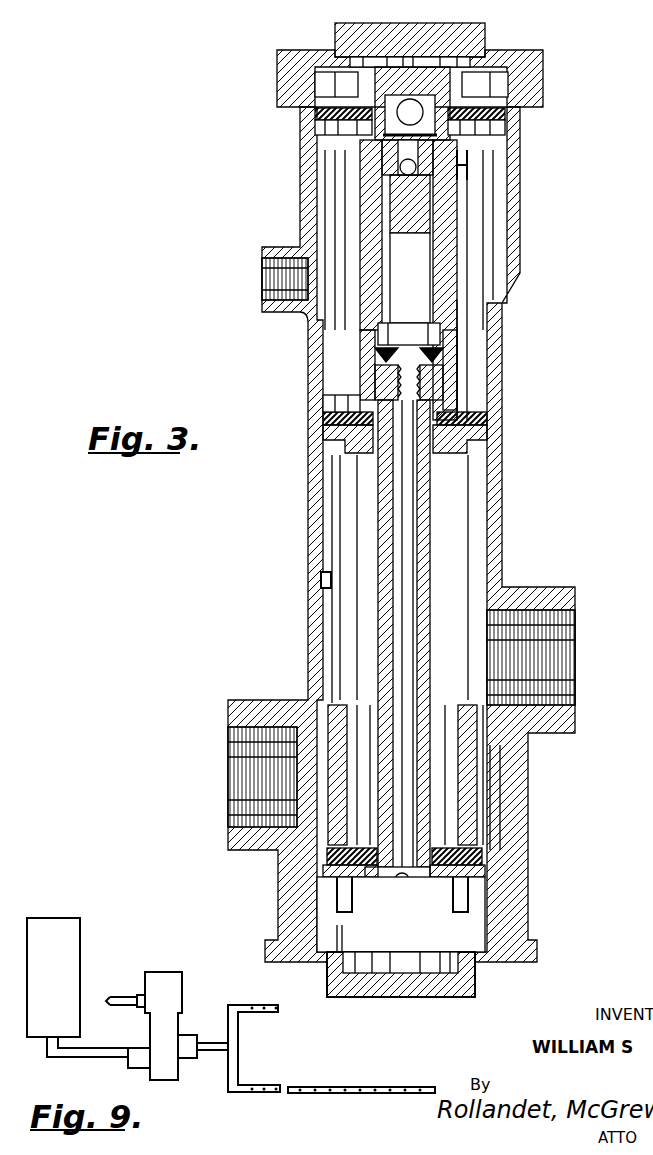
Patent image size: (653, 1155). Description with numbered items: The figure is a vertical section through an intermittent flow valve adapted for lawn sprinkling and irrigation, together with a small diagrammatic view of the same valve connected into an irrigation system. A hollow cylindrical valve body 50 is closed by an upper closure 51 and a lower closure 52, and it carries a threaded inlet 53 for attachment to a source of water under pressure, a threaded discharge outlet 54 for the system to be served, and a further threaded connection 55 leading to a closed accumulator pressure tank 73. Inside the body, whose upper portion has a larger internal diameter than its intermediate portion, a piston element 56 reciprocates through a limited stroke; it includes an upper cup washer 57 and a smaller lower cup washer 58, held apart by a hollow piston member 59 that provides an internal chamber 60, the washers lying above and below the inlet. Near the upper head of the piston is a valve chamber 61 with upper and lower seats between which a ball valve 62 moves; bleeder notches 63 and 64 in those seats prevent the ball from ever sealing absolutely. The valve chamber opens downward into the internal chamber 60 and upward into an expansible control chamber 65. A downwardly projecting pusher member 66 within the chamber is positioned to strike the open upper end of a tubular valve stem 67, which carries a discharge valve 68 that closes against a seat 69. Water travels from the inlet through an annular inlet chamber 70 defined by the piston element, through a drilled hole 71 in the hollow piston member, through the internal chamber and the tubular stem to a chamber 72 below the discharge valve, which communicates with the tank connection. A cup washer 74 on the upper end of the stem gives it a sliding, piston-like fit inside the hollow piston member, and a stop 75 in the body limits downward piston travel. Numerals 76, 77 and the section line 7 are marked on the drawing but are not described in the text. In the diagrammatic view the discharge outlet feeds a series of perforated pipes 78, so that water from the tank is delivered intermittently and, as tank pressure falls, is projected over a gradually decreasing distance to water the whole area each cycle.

In FIG. 3, the valve body 50 is at (503, 463).
In FIG. 9, the valve body 50 is at (182, 990).
In FIG. 3, the upper closure 51 is at (543, 54).
In FIG. 3, the lower closure 52 is at (477, 978).
In FIG. 3, the threaded inlet 53 is at (262, 275).
In FIG. 9, the threaded inlet 53 is at (138, 997).
In FIG. 3, the discharge outlet 54 is at (560, 667).
In FIG. 9, the discharge outlet 54 is at (190, 1042).
In FIG. 3, the connection 55 is at (233, 760).
In FIG. 9, the connection 55 is at (135, 1055).
In FIG. 3, the piston element 56 is at (457, 248).
In FIG. 3, the upper cup washer 57 is at (507, 117).
In FIG. 3, the lower cup washer 58 is at (490, 422).
In FIG. 3, the hollow piston member 59 is at (457, 303).
In FIG. 3, the internal chamber 60 is at (425, 280).
In FIG. 3, the valve chamber 61 is at (387, 128).
In FIG. 3, the ball valve 62 is at (415, 113).
In FIG. 3, the bleeder notch 63 is at (400, 85).
In FIG. 3, the bleeder notch 64 is at (400, 150).
In FIG. 3, the expansible control chamber 65 is at (327, 78).
In FIG. 3, the pusher member 66 is at (415, 233).
In FIG. 3, the tubular valve stem 67 is at (433, 487).
In FIG. 3, the discharge valve 68 is at (343, 868).
In FIG. 3, the seat 69 is at (463, 830).
In FIG. 3, the annular inlet chamber 70 is at (483, 335).
In FIG. 3, the drilled hole 71 is at (457, 172).
In FIG. 3, the chamber 72 is at (401, 914).
In FIG. 9, the accumulator pressure tank 73 is at (77, 987).
In FIG. 3, the cup washer 74 is at (440, 363).
In FIG. 3, the stop 75 is at (320, 577).
In FIG. 3, the gland 76 is at (443, 388).
In FIG. 3, the threads 77 is at (442, 372).
In FIG. 9, the perforated pipes 78 is at (275, 1033).
In FIG. 3, the section line 7- 7 is at (273, 185).